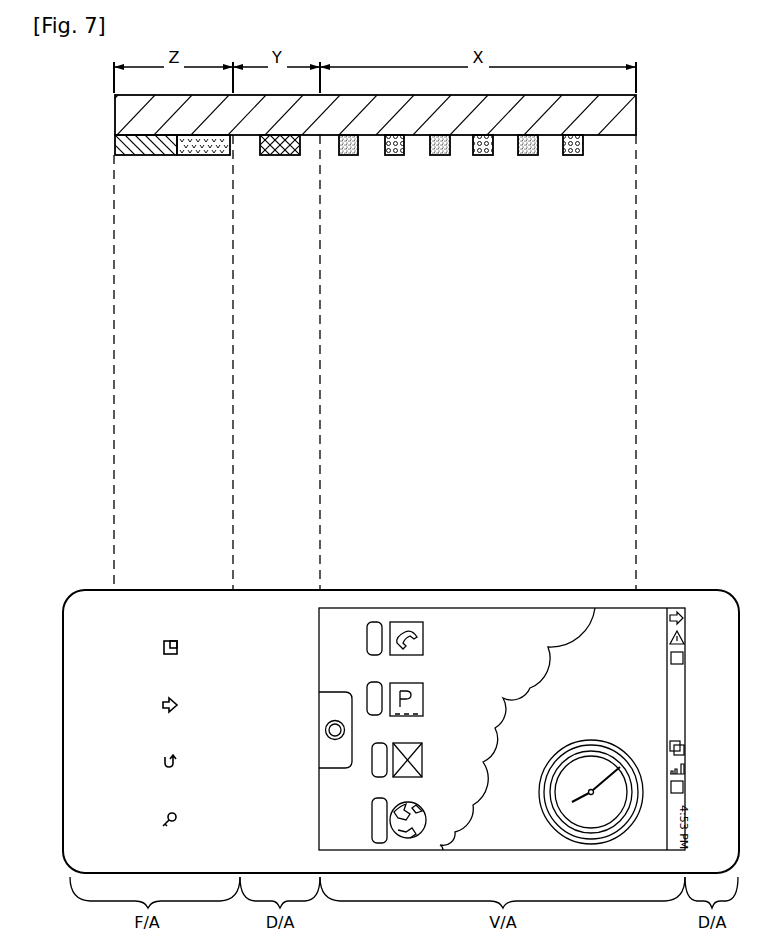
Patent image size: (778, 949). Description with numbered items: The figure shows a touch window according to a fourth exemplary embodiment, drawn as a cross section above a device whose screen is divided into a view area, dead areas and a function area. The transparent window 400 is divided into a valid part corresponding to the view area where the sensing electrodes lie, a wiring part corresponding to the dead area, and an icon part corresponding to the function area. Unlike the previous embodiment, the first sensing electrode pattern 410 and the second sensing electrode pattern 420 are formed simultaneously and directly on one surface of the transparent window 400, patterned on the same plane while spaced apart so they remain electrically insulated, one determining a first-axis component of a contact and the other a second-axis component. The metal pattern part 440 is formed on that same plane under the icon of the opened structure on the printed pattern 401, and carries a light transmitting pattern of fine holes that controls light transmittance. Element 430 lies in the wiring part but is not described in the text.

The transparent window 400 is at (630, 117).
The printed pattern 401 is at (120, 146).
The first sensing electrode pattern 410 is at (582, 157).
The second sensing electrode pattern 420 is at (528, 156).
The sensor 430 is at (280, 156).
The metal pattern part 440 is at (200, 156).